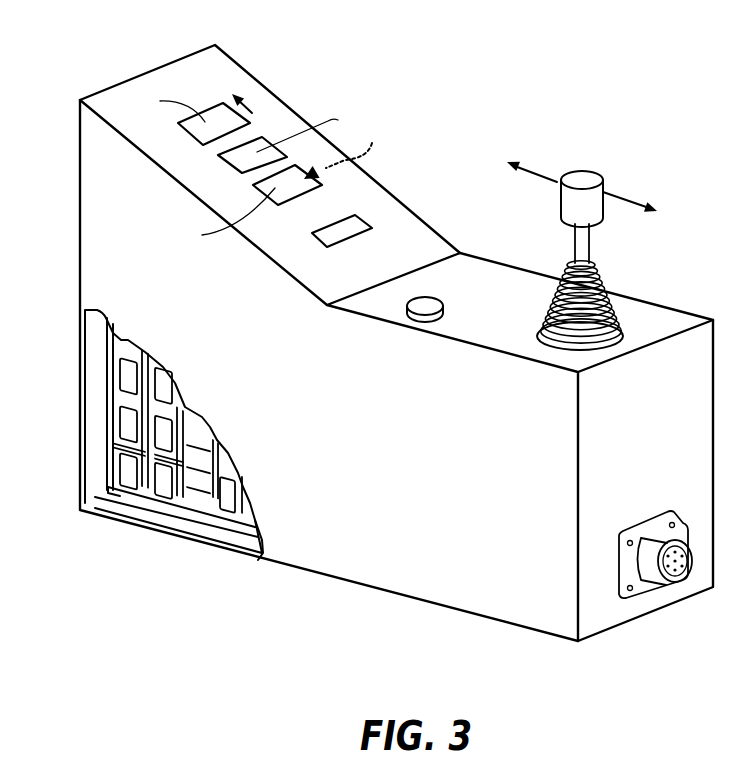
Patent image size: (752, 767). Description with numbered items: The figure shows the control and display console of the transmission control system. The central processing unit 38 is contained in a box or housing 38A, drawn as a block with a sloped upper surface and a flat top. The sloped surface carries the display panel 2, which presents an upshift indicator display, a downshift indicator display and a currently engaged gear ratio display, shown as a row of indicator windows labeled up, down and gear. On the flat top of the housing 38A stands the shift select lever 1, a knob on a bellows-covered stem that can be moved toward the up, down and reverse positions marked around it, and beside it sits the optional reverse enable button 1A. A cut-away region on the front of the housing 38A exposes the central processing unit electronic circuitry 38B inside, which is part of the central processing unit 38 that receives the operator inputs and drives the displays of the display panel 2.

The shift select lever 1 is at (587, 182).
The reverse enable button 1A is at (425, 312).
The display panel 2 is at (204, 78).
The central processing unit 38 is at (91, 367).
The housing 38A is at (410, 575).
The central processing unit electronic circuitry 38B is at (130, 422).